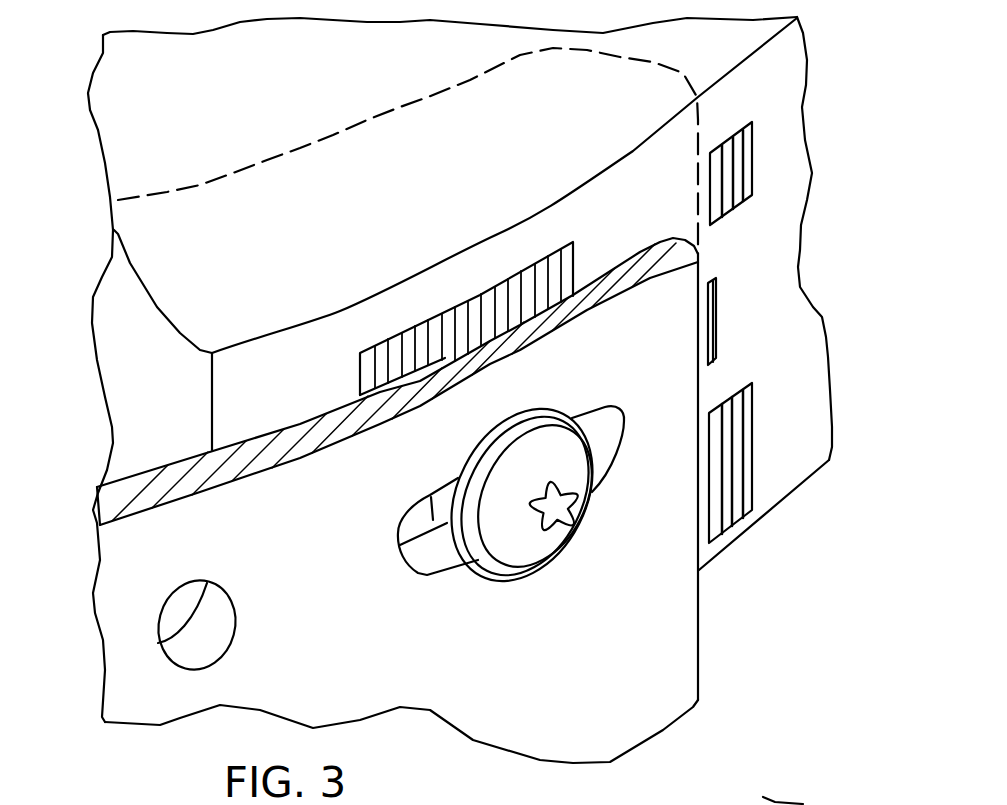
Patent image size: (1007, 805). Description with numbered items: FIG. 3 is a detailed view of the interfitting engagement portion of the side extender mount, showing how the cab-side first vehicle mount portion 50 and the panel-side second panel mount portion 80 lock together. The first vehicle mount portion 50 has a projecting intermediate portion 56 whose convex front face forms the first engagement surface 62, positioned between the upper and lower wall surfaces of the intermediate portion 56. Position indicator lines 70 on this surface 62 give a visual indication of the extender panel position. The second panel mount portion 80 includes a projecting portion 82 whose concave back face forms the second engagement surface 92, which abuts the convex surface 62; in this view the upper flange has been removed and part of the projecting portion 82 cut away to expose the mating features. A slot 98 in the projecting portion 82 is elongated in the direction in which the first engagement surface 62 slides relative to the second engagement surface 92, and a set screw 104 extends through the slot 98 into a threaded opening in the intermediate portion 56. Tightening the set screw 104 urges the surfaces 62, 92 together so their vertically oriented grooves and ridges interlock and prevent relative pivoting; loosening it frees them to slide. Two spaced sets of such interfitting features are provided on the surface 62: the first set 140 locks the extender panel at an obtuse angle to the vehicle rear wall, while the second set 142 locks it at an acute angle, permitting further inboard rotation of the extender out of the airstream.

The first vehicle mount portion 50 is at (777, 72).
The projecting intermediate portion 56 is at (133, 147).
The first engagement surface 62 is at (620, 242).
The position indicator lines 70 is at (716, 322).
The second panel mount portion 80 is at (690, 656).
The projecting portion of the second panel mount portion 82 is at (663, 600).
The second engagement surface 92 is at (177, 465).
The slot 98 is at (427, 558).
The set screw 104 is at (533, 547).
The first set of interfitting features 140 is at (530, 302).
The second set of interfitting features 142 is at (750, 182).